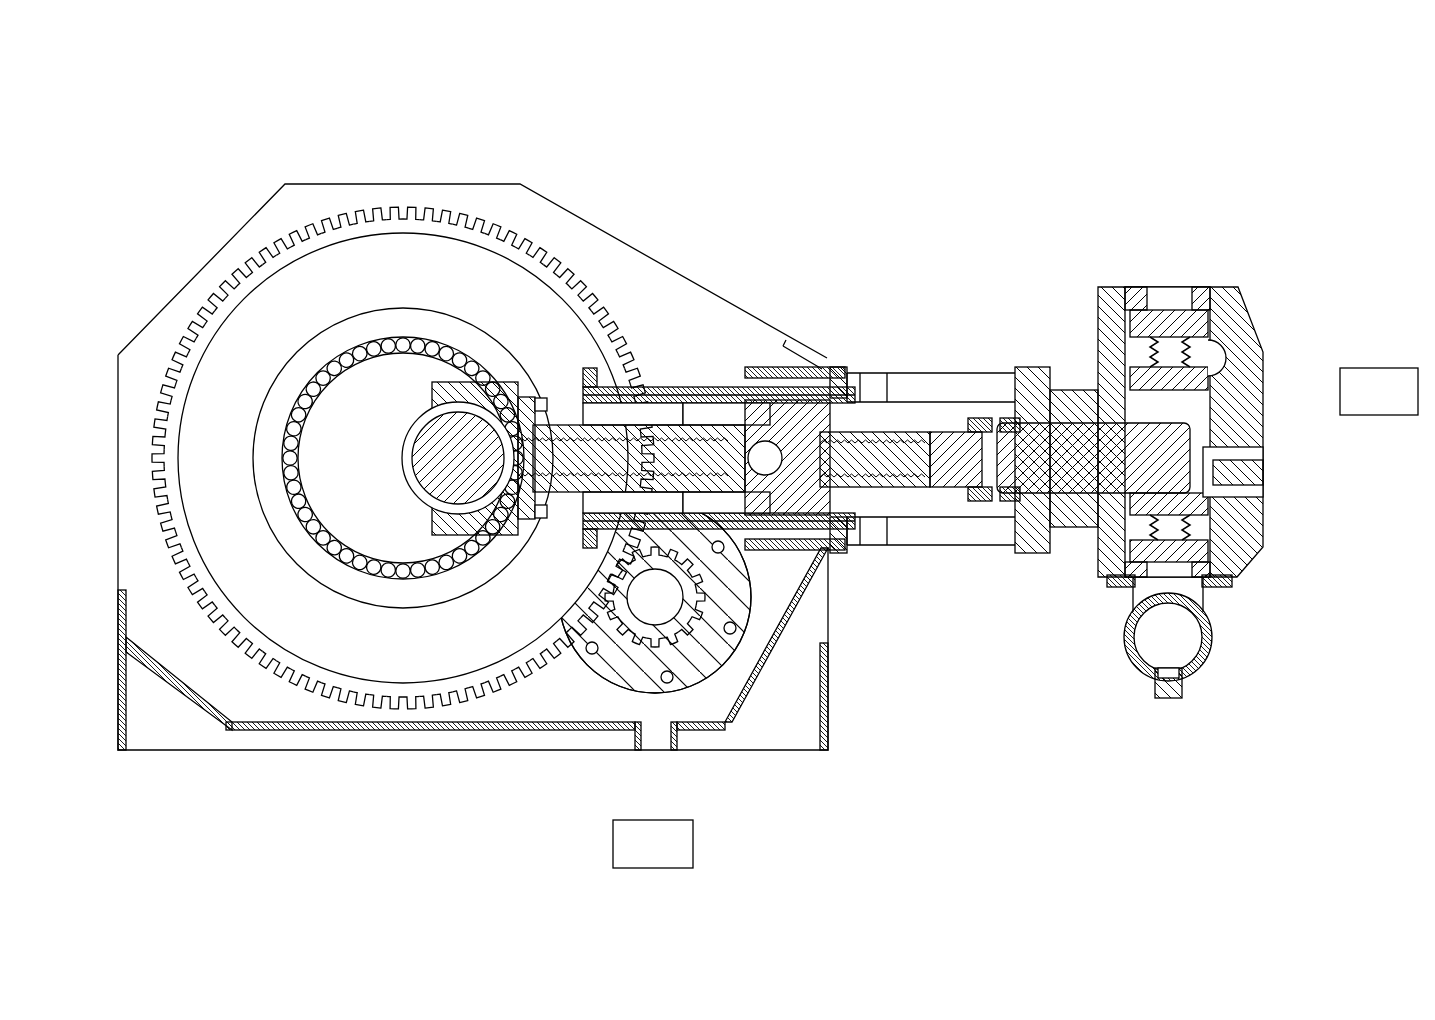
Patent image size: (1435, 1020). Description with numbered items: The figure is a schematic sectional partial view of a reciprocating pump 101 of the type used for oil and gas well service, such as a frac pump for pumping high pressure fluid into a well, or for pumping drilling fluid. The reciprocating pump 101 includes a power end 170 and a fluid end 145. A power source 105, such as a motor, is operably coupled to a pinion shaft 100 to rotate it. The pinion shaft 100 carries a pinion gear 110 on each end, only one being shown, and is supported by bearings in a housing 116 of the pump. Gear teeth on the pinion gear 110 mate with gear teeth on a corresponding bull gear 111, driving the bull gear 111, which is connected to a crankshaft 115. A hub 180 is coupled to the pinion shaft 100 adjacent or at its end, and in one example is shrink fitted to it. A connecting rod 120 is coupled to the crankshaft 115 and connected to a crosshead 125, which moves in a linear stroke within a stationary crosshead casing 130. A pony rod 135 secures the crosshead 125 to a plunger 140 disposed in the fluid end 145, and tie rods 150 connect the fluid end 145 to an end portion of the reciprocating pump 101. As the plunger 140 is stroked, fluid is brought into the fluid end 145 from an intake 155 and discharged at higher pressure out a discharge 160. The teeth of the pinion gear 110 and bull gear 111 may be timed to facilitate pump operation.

The pinion shaft 100 is at (648, 594).
The reciprocating pump 101 is at (1073, 80).
The power source 105 is at (655, 820).
The pinion gear 110 is at (598, 642).
The bull gear 111 is at (560, 318).
The crankshaft 115 is at (447, 459).
The housing 116 is at (822, 604).
The connecting rod 120 is at (662, 425).
The crosshead 125 is at (798, 398).
The crosshead casing 130 is at (705, 392).
The pony rod 135 is at (905, 428).
The plunger 140 is at (1082, 440).
The fluid end 145 is at (1262, 320).
The tie rod 150 is at (970, 372).
The intake 155 is at (1213, 636).
The discharge 160 is at (1270, 396).
The power end 170 is at (420, 184).
The hub 180 is at (712, 660).